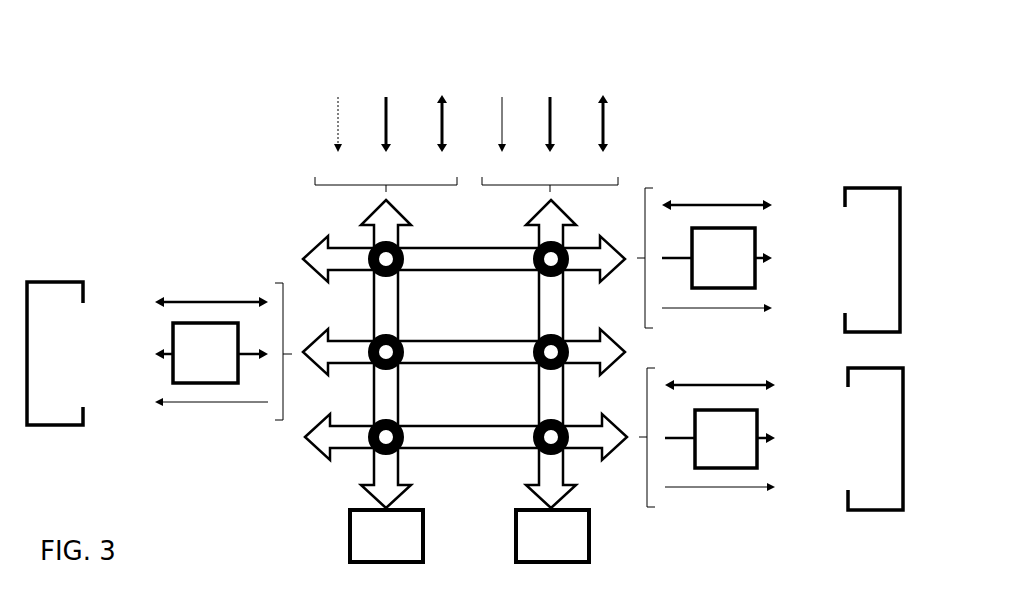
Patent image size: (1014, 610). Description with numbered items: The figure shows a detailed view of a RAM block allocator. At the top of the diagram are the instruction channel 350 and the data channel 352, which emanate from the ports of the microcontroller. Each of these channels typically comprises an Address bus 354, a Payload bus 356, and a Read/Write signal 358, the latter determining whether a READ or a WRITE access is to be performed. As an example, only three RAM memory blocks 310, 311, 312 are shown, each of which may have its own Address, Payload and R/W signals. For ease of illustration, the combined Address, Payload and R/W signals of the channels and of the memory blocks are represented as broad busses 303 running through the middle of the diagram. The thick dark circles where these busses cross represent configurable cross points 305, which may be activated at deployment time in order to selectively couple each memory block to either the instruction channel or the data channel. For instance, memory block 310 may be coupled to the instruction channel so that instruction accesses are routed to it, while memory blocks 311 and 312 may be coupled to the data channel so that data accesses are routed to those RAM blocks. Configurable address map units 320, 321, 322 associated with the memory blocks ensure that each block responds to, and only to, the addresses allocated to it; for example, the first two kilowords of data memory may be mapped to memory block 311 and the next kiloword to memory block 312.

The broad busses 303 is at (548, 476).
The configurable cross points 305 is at (540, 425).
The RAM memory block 310 is at (43, 300).
The RAM memory block 311 is at (886, 202).
The RAM memory block 312 is at (888, 490).
The configurable address map unit 320 is at (200, 376).
The configurable address map unit 321 is at (727, 238).
The configurable address map unit 322 is at (722, 462).
The instruction channel 350 is at (387, 114).
The data channel 352 is at (554, 112).
The Address bus 354 is at (388, 133).
The Payload bus 356 is at (441, 133).
The Read/Write (R/W) signal 358 is at (340, 134).